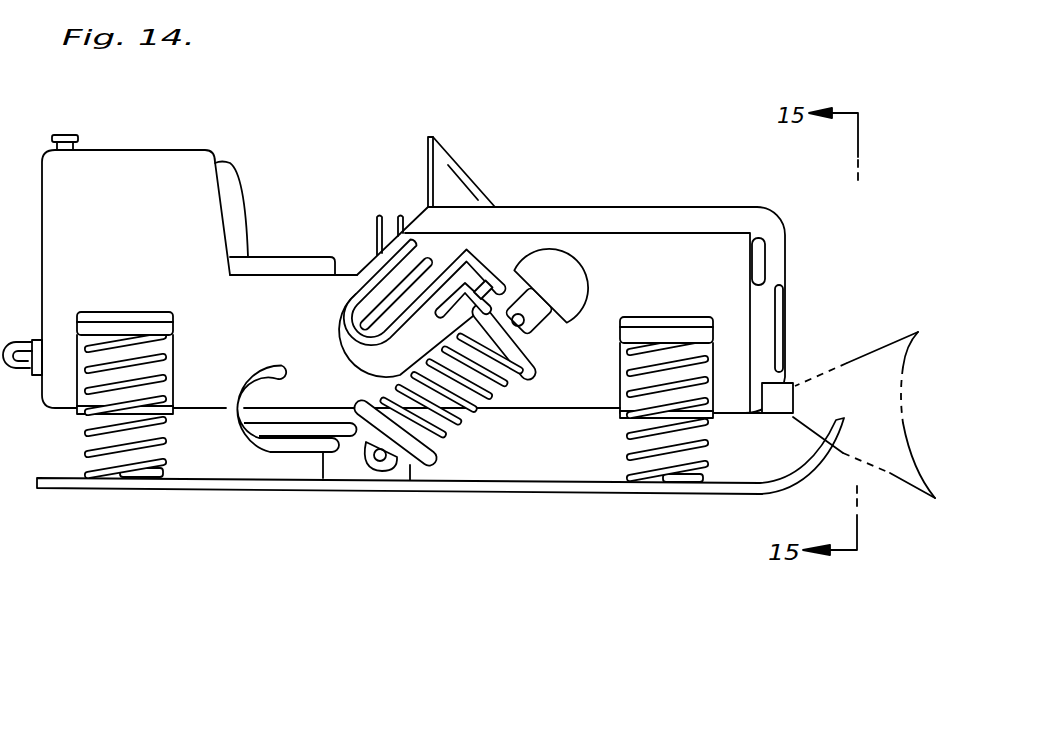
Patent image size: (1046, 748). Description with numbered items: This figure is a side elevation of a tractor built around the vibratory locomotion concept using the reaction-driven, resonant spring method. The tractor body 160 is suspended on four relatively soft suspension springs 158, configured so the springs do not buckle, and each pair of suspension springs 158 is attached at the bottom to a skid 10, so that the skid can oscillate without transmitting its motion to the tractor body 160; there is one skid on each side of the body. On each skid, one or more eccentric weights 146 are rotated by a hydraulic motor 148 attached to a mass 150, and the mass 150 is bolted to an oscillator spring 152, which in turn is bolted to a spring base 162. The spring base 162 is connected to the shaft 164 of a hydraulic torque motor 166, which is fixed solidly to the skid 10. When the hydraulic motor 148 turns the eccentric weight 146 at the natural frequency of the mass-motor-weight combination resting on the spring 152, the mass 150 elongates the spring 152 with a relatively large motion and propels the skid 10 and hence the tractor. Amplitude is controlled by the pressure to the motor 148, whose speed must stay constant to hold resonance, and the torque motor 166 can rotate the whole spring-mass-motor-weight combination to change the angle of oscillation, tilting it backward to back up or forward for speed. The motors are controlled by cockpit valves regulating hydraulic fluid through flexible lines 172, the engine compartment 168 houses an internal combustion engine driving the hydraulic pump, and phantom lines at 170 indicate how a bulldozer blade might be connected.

The skid 10 is at (688, 488).
The eccentric weight 146 is at (560, 278).
The hydraulic motor 148 is at (532, 350).
The mass 150 is at (521, 380).
The oscillator spring 152 is at (440, 430).
The suspension springs 158 is at (90, 445).
The tractor body 160 is at (180, 163).
The spring base 162 is at (417, 470).
The shaft 164 is at (382, 458).
The hydraulic torque motor 166 is at (347, 462).
The engine compartment 168 is at (675, 267).
The bulldozer blade 170 is at (887, 372).
The flexible lines 172 is at (341, 333).